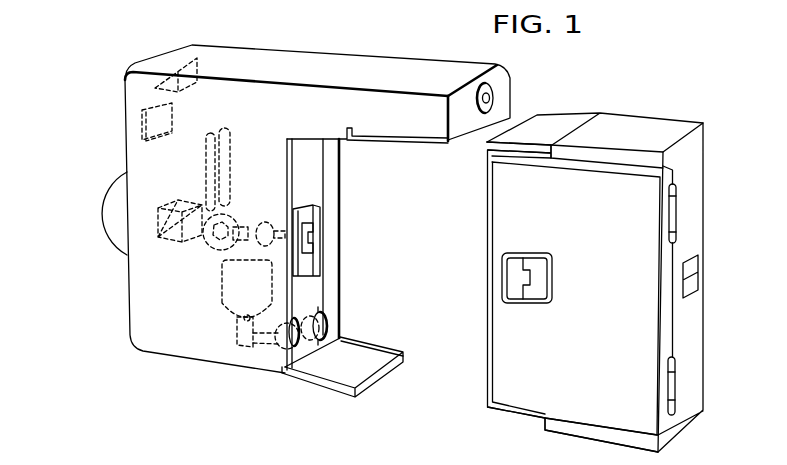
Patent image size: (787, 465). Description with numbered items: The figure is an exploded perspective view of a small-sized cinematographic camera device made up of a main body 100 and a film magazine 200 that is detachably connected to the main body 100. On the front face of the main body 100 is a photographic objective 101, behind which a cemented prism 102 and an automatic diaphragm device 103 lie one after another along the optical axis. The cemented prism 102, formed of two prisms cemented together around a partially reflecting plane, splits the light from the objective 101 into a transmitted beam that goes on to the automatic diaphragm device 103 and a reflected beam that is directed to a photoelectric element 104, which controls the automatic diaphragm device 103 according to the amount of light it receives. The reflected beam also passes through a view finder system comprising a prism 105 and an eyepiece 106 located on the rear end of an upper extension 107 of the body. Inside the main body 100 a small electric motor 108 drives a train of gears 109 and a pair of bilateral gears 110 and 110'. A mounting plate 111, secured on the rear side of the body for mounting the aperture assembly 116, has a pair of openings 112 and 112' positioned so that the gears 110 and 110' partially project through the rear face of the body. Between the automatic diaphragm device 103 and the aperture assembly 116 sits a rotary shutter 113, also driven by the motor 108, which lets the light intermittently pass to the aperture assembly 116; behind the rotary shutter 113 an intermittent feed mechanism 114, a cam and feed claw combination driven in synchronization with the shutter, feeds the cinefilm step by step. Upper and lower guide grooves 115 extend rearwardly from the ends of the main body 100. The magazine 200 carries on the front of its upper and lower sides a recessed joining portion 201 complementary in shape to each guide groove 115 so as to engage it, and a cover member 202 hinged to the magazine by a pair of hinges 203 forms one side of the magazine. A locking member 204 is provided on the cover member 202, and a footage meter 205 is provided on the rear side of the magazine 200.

The main body 100 is at (299, 41).
The photographic objective 101 is at (114, 195).
The cemented prism 102 is at (158, 238).
The automatic diaphragm device 103 is at (231, 165).
The photoelectric element 104 is at (140, 122).
The prism 105 is at (198, 57).
The eyepiece 106 is at (492, 96).
The upper extension 107 is at (377, 62).
The small electric motor 108 is at (222, 293).
The train of gears 109 is at (258, 342).
The bilateral gear 110 is at (348, 323).
The bilateral gear 110' is at (319, 345).
The mounting plate 111 is at (310, 163).
The opening 112 is at (341, 305).
The opening 112' is at (301, 367).
The rotary shutter 113 is at (287, 228).
The intermittent feed mechanism 114 is at (300, 237).
The guide groove 115 is at (358, 133).
The aperture assembly 116 is at (322, 212).
The film magazine 200 is at (681, 110).
The joining portion 201 is at (547, 122).
The cover member 202 is at (502, 355).
The hinge 203 is at (677, 215).
The locking member 204 is at (512, 296).
The footage meter 205 is at (697, 285).